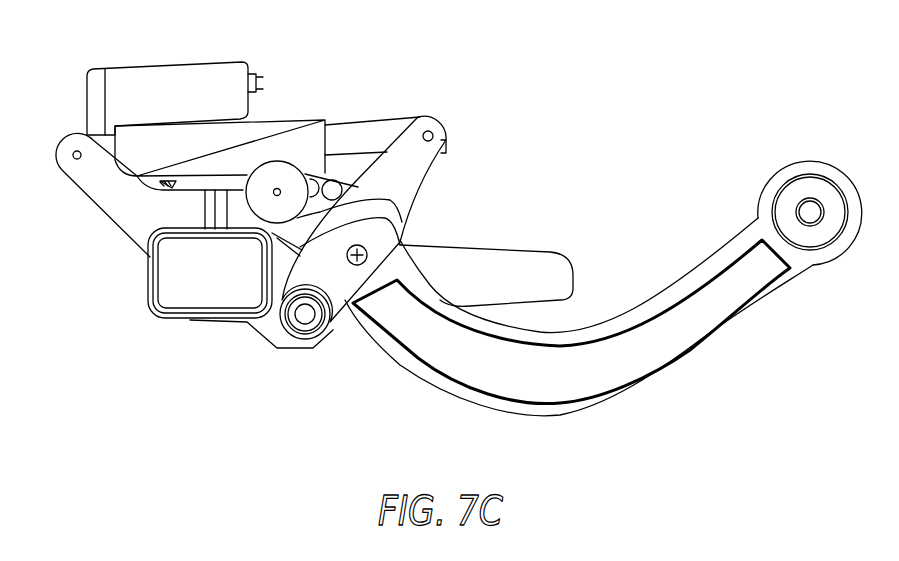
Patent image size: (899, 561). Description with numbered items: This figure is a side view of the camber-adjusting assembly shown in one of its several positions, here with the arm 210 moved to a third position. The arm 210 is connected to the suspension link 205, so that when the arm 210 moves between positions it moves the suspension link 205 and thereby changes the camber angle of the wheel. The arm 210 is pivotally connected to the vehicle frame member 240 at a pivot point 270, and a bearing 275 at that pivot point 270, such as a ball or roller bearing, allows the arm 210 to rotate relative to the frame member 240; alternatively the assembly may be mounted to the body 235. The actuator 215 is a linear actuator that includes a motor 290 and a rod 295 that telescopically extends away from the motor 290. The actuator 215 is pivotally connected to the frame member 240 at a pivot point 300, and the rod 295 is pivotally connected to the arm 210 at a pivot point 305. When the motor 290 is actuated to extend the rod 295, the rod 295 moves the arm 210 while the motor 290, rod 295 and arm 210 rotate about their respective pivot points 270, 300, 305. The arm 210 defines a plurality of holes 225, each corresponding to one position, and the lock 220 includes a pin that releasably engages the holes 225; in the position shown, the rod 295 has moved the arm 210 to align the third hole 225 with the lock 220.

The suspension link 205 is at (675, 300).
The arm 210 is at (412, 172).
The actuator 215 is at (185, 80).
The lock 220 is at (275, 175).
The holes 225 is at (333, 186).
The body 235 is at (118, 196).
The frame member 240 is at (128, 242).
The pivot point 270 is at (303, 318).
The bearing 275 is at (312, 340).
The motor 290 is at (157, 66).
The rod 295 is at (396, 118).
The pivot point 300 is at (74, 151).
The pivot point 305 is at (432, 132).